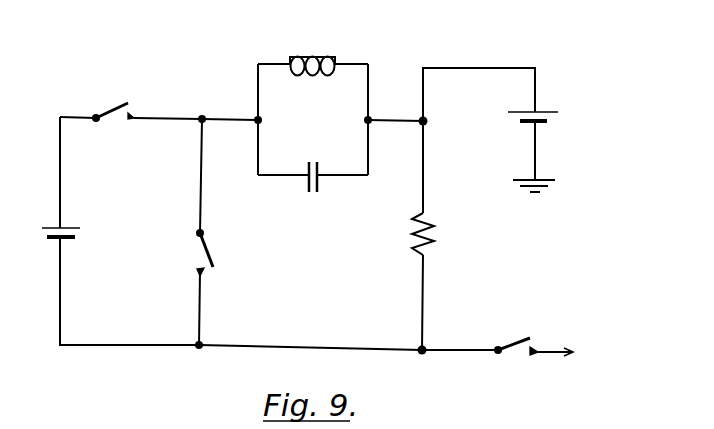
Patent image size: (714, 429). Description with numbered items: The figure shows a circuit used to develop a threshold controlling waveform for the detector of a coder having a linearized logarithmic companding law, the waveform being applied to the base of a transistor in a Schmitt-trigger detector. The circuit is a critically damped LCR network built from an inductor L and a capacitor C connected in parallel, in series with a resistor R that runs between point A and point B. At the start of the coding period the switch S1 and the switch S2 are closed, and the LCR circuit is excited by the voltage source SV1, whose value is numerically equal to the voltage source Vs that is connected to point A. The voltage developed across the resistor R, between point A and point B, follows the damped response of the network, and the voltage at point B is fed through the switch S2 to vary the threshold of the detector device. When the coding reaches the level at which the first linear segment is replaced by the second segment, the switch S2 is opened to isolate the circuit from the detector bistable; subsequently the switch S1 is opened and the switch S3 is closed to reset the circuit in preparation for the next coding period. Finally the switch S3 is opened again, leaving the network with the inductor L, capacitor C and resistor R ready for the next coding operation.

The switch S1 is at (118, 110).
The voltage source SV1 is at (68, 227).
The switch S3 is at (205, 251).
The inductor L is at (322, 58).
The capacitor C is at (306, 193).
The point A is at (432, 124).
The voltage source Vs is at (537, 112).
The resistor R is at (434, 245).
The point B is at (419, 364).
The switch S2 is at (503, 347).